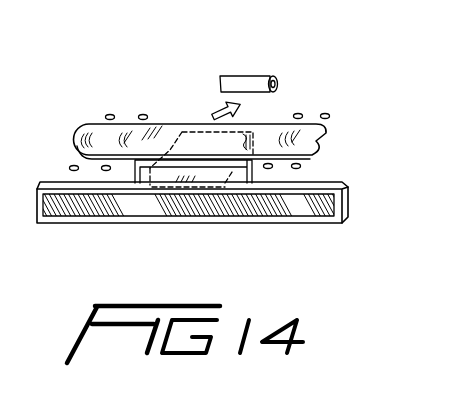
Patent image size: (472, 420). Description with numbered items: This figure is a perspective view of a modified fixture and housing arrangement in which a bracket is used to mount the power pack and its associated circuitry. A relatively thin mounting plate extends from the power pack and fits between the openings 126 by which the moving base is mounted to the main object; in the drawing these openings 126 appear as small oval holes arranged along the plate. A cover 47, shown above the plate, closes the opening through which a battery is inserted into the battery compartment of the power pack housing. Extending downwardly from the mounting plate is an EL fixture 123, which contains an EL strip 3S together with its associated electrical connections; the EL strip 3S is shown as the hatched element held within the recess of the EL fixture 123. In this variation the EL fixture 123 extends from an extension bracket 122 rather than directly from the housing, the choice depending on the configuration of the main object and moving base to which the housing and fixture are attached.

The cover 47 is at (230, 80).
The openings 126 is at (327, 114).
The EL fixture 123 is at (337, 203).
The EL strip 3S is at (79, 210).
The extension bracket 122 is at (147, 175).